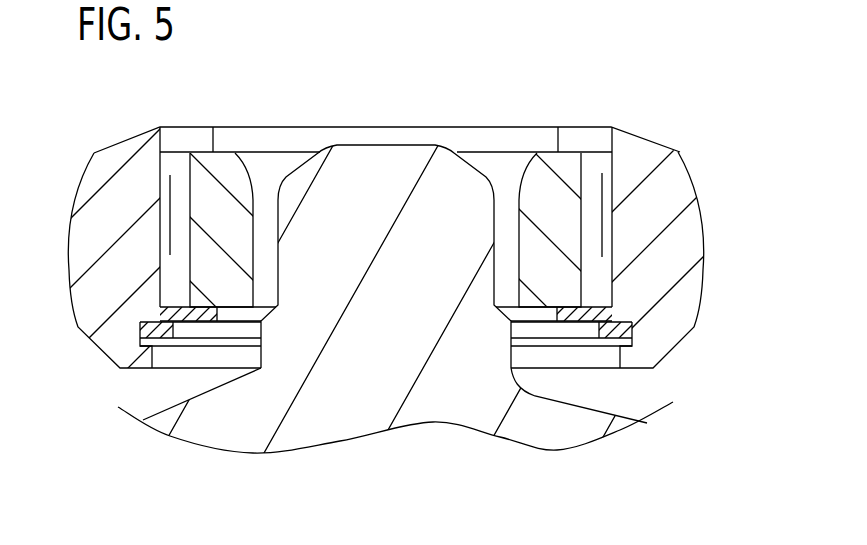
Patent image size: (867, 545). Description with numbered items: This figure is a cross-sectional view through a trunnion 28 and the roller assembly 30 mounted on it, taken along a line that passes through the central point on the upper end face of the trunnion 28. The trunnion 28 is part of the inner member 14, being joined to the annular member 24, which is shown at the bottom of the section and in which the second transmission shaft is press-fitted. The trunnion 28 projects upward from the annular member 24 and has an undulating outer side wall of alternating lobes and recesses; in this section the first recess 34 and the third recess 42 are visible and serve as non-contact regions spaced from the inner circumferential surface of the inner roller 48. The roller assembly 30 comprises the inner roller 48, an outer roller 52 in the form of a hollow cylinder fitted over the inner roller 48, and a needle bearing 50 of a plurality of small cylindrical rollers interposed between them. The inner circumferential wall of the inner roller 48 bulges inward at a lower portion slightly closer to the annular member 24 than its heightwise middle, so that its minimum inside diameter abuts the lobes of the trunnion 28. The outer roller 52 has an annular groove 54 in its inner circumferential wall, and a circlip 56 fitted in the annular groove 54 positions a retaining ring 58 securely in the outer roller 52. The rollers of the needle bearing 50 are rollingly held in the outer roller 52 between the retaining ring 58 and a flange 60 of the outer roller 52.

The inner member 14 is at (542, 430).
The annular member 24 is at (582, 422).
The trunnion 28 is at (377, 155).
The roller assembly 30 is at (636, 126).
The first recess 34 is at (280, 276).
The third recess 42 is at (492, 276).
The inner roller 48 is at (538, 190).
The needle bearing 50 is at (185, 272).
The outer roller 52 is at (678, 168).
The annular groove 54 is at (163, 323).
The circlip 56 is at (231, 333).
The retaining ring 58 is at (570, 318).
The flange 60 is at (580, 142).